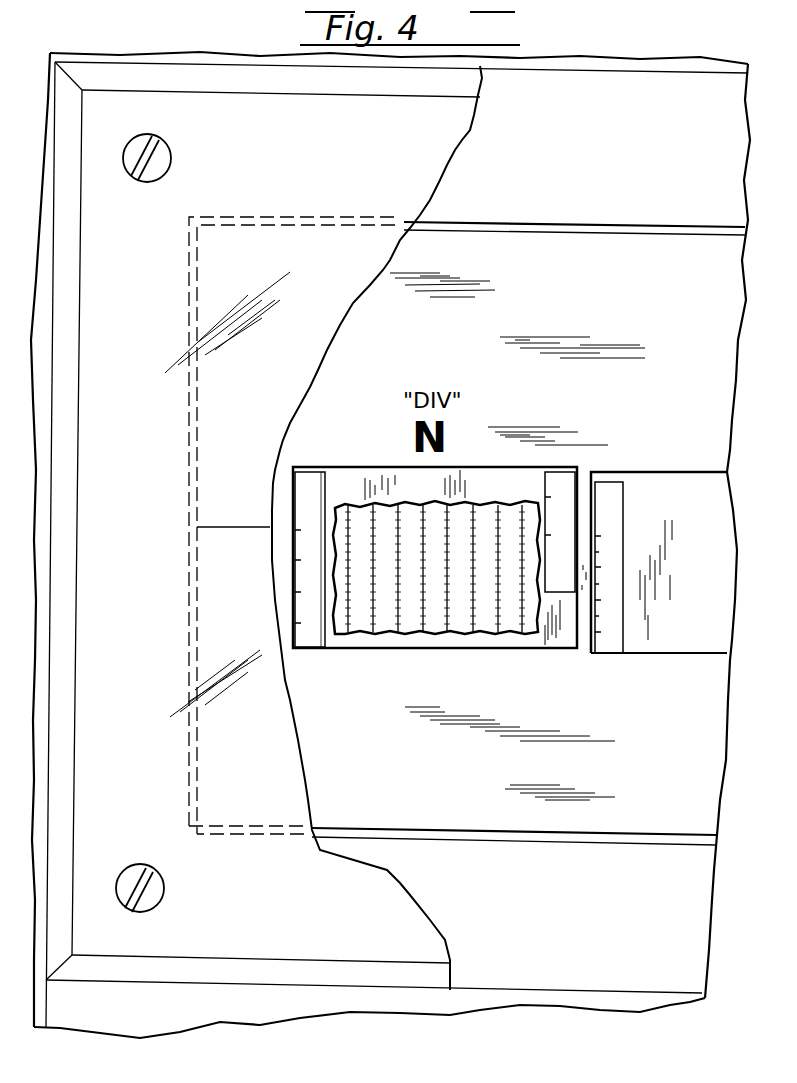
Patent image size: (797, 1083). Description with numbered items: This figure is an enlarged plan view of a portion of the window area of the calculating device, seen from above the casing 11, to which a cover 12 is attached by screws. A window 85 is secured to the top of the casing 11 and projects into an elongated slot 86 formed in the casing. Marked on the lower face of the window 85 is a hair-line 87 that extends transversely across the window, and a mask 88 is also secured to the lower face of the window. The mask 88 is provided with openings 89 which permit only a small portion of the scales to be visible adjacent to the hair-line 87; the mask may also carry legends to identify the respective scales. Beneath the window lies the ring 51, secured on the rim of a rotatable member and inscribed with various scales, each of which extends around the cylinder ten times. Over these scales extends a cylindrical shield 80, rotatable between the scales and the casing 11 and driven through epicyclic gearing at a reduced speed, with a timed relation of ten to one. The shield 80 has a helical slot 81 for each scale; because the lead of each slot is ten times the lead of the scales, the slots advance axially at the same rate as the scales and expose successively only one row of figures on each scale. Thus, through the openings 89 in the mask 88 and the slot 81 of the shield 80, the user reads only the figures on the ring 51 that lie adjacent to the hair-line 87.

The casing 11 is at (722, 66).
The cover 12 is at (37, 1030).
The ring 51 is at (364, 628).
The cylindrical shield 80 is at (679, 648).
The slot 81 is at (312, 476).
The window 85 is at (455, 140).
The elongated slot 86 is at (615, 228).
The hair-line 87 is at (228, 529).
The mask 88 is at (718, 368).
The openings 89 is at (528, 648).